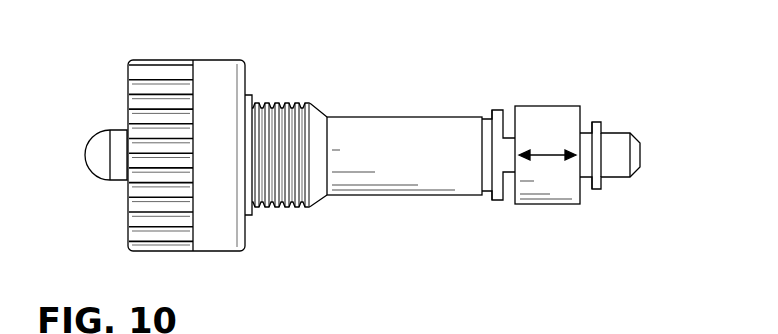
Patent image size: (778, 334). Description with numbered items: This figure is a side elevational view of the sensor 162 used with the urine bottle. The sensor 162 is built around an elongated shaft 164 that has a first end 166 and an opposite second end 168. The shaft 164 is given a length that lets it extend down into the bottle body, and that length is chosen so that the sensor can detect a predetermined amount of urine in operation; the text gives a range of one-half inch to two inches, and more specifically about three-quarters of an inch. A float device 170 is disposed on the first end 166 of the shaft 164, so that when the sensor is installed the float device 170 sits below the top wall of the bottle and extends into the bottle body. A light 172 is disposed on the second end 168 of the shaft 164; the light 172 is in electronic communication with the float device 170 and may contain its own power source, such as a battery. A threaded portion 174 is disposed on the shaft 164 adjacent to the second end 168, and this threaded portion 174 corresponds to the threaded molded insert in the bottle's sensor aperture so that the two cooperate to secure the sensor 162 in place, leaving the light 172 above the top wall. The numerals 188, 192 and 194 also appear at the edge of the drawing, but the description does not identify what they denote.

The sensor 162 is at (632, 77).
The shaft 164 is at (405, 116).
The first end 166 is at (283, 104).
The second end 168 is at (548, 106).
The float device 170 is at (547, 204).
The light 172 is at (88, 165).
The threaded portion 174 is at (282, 207).
The component 188 is at (641, 333).
The component 192 is at (454, 333).
The component 194 is at (380, 329).